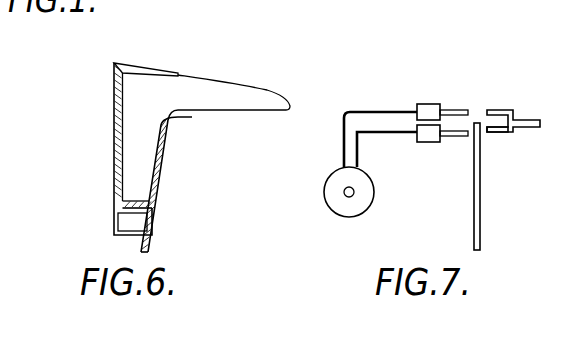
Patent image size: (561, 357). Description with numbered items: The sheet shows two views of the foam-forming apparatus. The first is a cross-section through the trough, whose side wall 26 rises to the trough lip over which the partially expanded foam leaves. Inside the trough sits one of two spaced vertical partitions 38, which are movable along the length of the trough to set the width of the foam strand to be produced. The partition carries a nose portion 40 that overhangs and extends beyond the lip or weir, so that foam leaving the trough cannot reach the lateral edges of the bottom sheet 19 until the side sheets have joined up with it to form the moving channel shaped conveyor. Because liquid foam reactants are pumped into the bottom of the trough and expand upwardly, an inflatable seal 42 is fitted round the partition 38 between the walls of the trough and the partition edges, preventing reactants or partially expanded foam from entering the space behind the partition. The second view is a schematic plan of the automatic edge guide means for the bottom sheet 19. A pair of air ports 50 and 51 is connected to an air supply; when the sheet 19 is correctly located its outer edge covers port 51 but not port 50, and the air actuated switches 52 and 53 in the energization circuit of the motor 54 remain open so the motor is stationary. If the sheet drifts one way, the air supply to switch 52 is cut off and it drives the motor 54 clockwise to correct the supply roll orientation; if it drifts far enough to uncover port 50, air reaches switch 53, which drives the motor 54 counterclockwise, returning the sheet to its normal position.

In FIG. 7, the bottom sheet 19 is at (481, 217).
In FIG. 6, the side wall 26 is at (173, 73).
In FIG. 6, the vertical partition 38 is at (137, 158).
In FIG. 6, the nose portion 40 is at (173, 104).
In FIG. 6, the inflatable seal 42 is at (167, 163).
In FIG. 7, the air port 50 is at (491, 110).
In FIG. 7, the air port 51 is at (493, 134).
In FIG. 7, the air actuated switch 52 is at (428, 110).
In FIG. 7, the air actuated switch 53 is at (428, 137).
In FIG. 7, the motor 54 is at (331, 201).